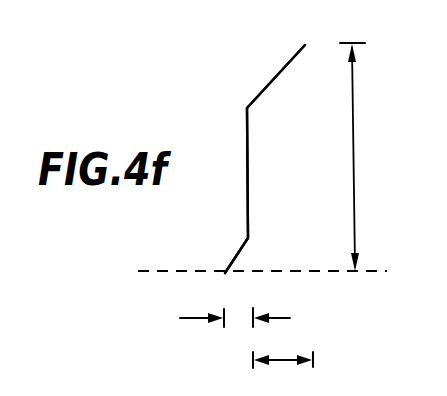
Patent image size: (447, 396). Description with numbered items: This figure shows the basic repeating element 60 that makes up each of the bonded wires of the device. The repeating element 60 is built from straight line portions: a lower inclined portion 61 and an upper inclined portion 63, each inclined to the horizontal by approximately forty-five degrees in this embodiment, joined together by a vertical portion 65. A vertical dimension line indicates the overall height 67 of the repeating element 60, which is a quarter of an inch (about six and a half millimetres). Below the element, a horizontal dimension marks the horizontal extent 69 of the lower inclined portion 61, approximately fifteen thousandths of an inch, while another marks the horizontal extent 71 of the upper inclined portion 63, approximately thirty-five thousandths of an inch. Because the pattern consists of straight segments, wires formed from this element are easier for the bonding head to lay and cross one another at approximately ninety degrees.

The repeating element 60 is at (214, 106).
The inclined portion 61 is at (236, 258).
The inclined portion 63 is at (291, 62).
The vertical portion 65 is at (249, 156).
The overall height 67 is at (354, 158).
The horizontal extent 69 is at (290, 318).
The horizontal extent 71 is at (283, 358).